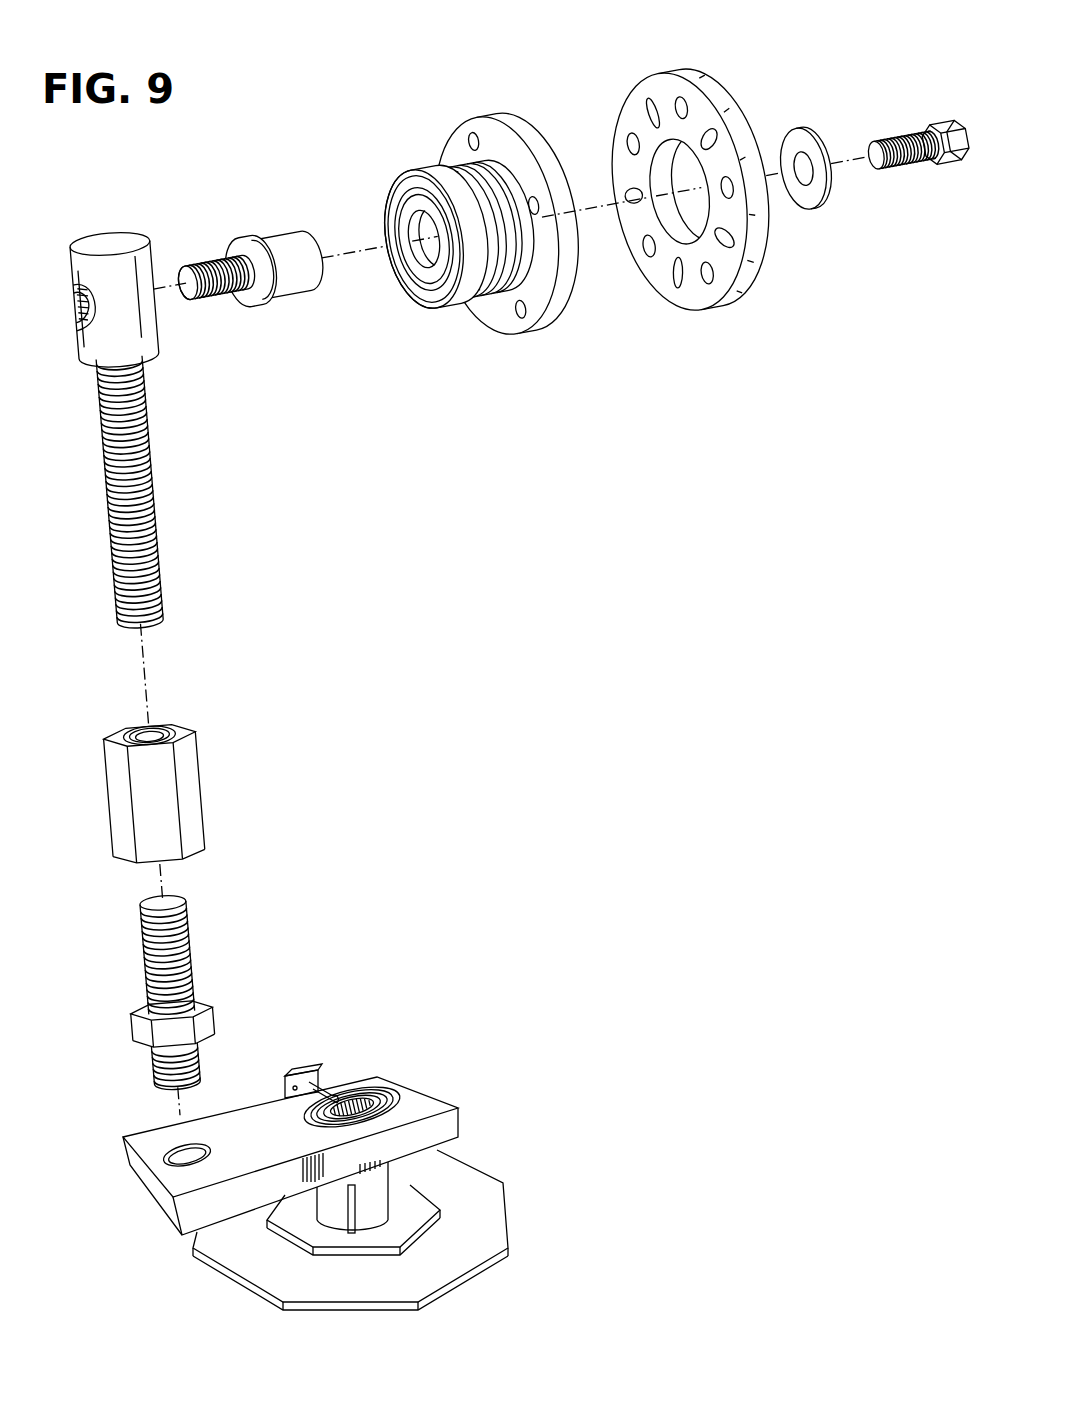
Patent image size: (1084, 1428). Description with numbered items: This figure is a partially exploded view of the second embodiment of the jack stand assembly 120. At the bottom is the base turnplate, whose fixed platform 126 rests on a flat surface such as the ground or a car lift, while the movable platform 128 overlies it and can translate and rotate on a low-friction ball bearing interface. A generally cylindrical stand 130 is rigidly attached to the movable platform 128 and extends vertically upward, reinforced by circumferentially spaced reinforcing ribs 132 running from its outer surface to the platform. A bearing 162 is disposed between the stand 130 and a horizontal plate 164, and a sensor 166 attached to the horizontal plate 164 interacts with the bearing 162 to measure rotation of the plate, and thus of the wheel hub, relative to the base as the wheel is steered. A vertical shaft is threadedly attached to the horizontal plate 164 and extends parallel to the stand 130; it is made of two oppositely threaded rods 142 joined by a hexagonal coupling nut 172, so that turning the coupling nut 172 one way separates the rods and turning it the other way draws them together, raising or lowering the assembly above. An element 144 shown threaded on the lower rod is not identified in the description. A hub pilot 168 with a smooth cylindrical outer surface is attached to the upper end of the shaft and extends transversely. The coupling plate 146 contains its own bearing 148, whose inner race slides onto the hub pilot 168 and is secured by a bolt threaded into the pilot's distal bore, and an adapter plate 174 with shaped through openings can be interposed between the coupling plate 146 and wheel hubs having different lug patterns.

The jack stand assembly 120 is at (672, 307).
The fixed platform 126 is at (447, 1268).
The movable platform 128 is at (305, 1228).
The stand 130 is at (387, 1185).
The reinforcing ribs 132 is at (403, 1197).
The threaded rods 142 is at (148, 483).
The nut 144 is at (140, 1030).
The coupling plate 146 is at (468, 318).
The bearing 148 is at (413, 267).
The bearing 162 is at (383, 1096).
The horizontal plate 164 is at (238, 1115).
The sensor 166 is at (302, 1069).
The hub pilot 168 is at (290, 273).
The coupling nut 172 is at (182, 797).
The adapter plate 174 is at (710, 84).